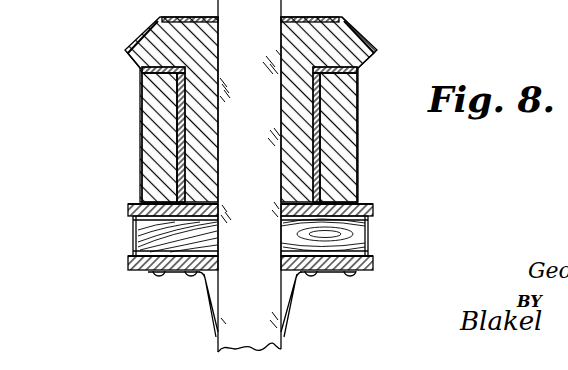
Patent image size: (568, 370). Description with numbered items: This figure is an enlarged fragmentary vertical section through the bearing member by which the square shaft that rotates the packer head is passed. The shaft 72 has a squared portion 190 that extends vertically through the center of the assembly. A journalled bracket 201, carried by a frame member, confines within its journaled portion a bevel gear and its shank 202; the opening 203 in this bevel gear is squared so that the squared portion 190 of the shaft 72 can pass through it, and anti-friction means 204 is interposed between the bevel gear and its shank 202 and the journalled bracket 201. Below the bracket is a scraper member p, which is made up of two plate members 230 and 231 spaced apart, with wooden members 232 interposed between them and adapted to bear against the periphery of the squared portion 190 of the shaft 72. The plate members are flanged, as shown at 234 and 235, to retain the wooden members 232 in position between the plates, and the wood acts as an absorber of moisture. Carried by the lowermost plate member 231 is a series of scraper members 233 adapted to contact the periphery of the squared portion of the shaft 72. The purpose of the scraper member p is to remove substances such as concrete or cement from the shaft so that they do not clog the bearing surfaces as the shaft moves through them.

The squared portion 190 is at (234, 173).
The shaft 72 is at (282, 350).
The journalled bracket 201 is at (357, 163).
The bevel gear and its shank 202 is at (216, 153).
The opening 203 is at (192, 100).
The anti-friction means 204 is at (320, 112).
The plate member 230 is at (371, 206).
The flange 235 is at (130, 220).
The wooden members 232 is at (368, 237).
The scraper member p is at (133, 241).
The flange 234 is at (128, 254).
The plate member 231 is at (356, 271).
The scraper members 233 is at (209, 293).